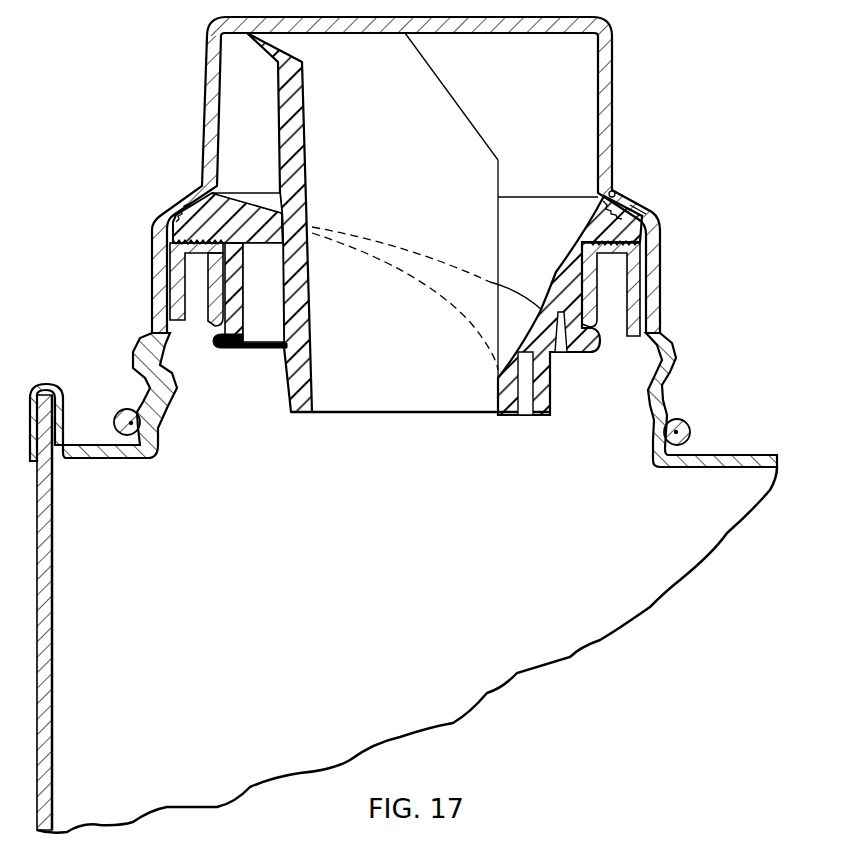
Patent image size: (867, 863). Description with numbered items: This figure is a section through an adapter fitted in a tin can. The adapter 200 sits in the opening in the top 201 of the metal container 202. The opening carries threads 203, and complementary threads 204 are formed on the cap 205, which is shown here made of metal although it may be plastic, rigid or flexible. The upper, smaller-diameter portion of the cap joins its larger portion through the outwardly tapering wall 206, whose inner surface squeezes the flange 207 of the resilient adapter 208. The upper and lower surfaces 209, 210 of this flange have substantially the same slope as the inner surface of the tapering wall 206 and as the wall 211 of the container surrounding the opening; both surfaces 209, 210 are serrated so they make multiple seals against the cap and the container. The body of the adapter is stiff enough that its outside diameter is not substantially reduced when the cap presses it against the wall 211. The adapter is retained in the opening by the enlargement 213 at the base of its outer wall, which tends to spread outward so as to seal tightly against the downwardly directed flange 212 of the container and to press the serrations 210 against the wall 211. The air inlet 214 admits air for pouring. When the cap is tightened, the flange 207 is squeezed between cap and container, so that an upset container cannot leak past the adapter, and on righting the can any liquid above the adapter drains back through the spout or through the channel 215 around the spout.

The adapter 200 is at (298, 123).
The top of the metal container 201 is at (113, 450).
The metal container 202 is at (600, 620).
The threads 203 is at (643, 363).
The complementary threads 204 is at (672, 378).
The cap 205 is at (606, 88).
The outwardly tapering wall 206 is at (632, 207).
The flange 207 is at (612, 206).
The resilient adapter 208 is at (571, 244).
The upper surface of the flange 209 is at (614, 192).
The lower surface of the flange 210 is at (646, 258).
The wall of the container 211 is at (197, 257).
The downwardly directed flange 212 is at (215, 318).
The enlargement 213 is at (584, 348).
The air inlet 214 is at (524, 416).
The channel 215 is at (264, 198).